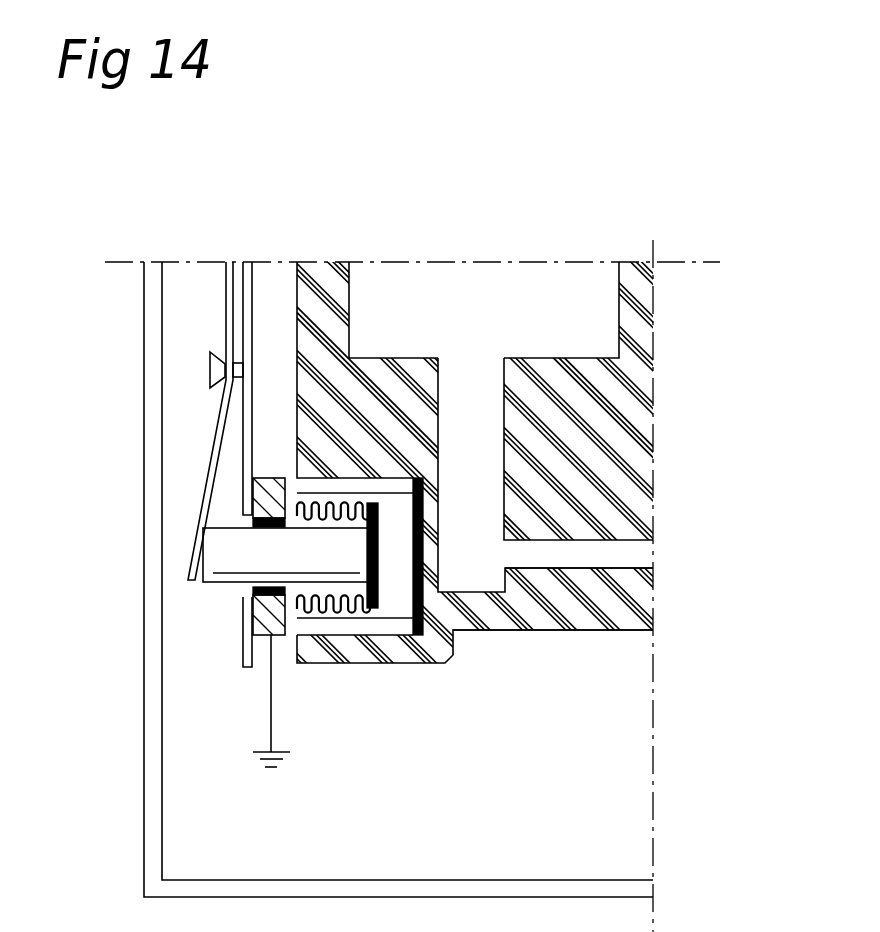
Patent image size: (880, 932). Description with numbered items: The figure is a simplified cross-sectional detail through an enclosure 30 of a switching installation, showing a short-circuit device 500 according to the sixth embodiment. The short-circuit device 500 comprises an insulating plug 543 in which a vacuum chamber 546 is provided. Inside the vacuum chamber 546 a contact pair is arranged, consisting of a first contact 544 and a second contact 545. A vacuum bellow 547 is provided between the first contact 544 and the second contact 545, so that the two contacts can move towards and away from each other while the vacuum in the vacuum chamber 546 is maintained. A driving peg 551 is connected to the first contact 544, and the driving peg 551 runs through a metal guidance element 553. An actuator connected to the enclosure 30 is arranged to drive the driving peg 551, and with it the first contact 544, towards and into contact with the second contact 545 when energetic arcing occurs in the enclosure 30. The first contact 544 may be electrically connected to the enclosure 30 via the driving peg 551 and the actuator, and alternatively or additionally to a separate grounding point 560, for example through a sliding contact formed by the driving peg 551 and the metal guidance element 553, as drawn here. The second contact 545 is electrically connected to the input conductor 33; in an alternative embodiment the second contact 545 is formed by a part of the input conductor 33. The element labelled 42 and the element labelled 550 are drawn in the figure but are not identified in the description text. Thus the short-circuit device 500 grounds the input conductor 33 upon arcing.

The enclosure 30 is at (157, 787).
The input conductor 33 is at (487, 567).
The housing block 42 is at (407, 375).
The short-circuit device 500 is at (223, 601).
The insulating plug 543 is at (470, 531).
The first contact 544 is at (367, 563).
The second contact 545 is at (431, 567).
The vacuum chamber 546 is at (393, 567).
The vacuum bellow 547 is at (349, 503).
The spring plate 550 is at (206, 492).
The driving peg 551 is at (222, 565).
The metal guidance element 553 is at (267, 493).
The grounding point 560 is at (271, 730).